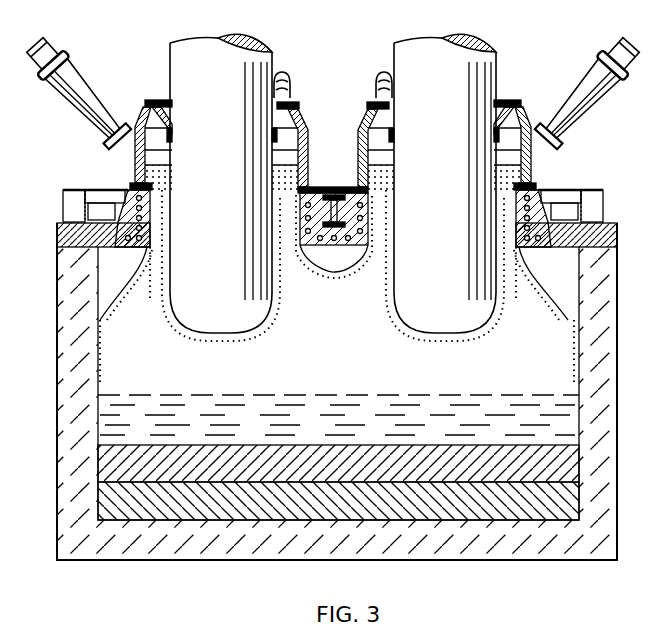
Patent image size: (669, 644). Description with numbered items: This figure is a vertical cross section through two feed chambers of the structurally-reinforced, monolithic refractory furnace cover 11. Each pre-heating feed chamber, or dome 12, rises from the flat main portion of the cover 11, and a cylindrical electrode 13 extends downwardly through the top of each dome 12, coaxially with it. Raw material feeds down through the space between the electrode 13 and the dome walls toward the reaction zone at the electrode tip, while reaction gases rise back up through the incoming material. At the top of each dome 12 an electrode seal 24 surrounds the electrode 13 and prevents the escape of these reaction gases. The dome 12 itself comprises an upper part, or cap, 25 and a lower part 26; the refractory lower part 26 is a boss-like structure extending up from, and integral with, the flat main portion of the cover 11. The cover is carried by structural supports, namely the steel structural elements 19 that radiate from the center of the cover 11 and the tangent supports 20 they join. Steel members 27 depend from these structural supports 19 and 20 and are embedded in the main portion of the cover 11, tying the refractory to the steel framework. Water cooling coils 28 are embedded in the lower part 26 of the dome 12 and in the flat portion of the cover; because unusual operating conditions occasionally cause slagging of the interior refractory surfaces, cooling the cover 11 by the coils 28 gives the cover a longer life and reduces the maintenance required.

The furnace cover 11 is at (608, 222).
The pre-heating feed chamber 12 is at (133, 176).
The cylindrical electrode 13 is at (333, 183).
The steel structural element 19 is at (330, 195).
The tangent support 20 is at (63, 203).
The electrode seal 24 is at (289, 97).
The upper part (cap) of dome 25 is at (364, 122).
The lower part of dome 26 is at (553, 190).
The steel member 27 is at (97, 247).
The water cooling coil 28 is at (148, 258).